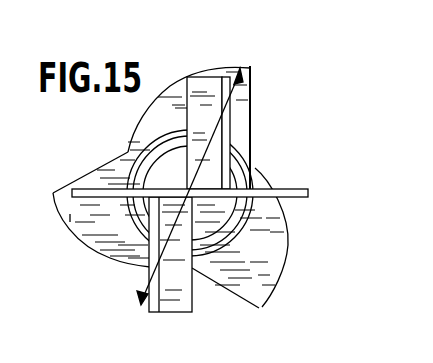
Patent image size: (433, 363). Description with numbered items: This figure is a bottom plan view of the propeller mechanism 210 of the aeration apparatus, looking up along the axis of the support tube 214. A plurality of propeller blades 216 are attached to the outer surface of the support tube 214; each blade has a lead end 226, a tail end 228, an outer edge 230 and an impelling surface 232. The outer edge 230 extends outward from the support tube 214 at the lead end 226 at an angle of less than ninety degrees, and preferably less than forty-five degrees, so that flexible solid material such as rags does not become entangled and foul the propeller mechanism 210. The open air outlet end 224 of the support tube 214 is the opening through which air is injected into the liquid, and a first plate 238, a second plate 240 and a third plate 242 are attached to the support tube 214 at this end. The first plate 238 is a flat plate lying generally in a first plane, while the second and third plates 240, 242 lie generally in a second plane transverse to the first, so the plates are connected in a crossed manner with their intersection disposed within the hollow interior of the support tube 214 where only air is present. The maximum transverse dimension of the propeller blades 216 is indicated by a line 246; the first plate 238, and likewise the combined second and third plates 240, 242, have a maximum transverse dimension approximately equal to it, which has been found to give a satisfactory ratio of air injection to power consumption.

The propeller mechanism 210 is at (100, 259).
The support tube 214 is at (243, 175).
The propeller blades 216 is at (247, 80).
The air outlet end 224 is at (150, 153).
The lead end 226 is at (262, 189).
The tail end 228 is at (255, 162).
The outer edge 230 is at (286, 262).
The impelling surface 232 is at (114, 226).
The first plate 238 is at (94, 170).
The second plate 240 is at (178, 312).
The third plate 242 is at (202, 83).
The line indicating maximum transverse dimension 246 is at (253, 106).